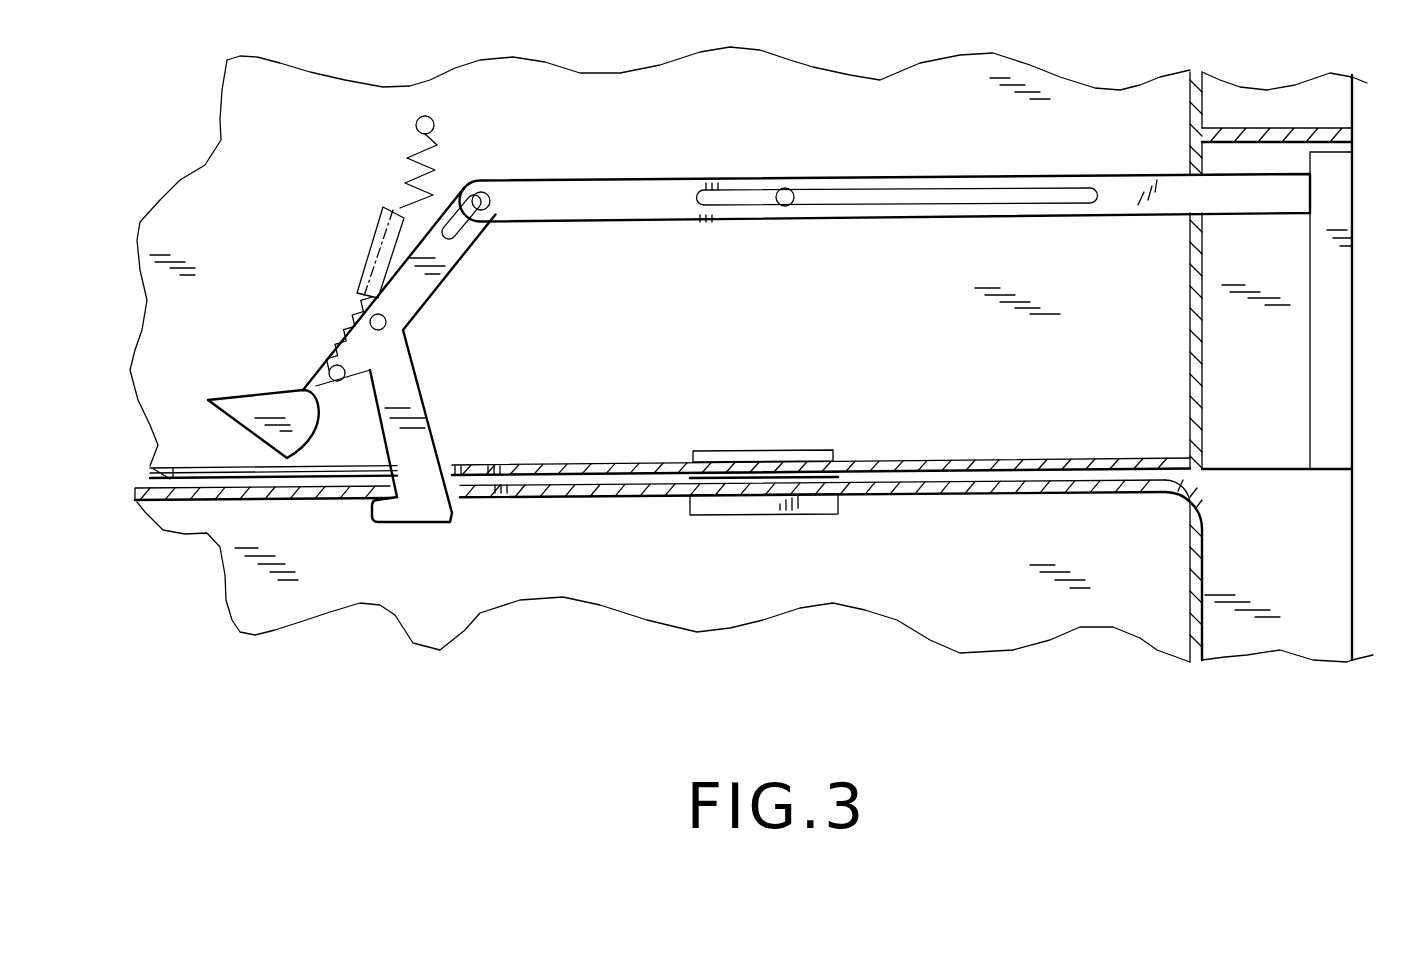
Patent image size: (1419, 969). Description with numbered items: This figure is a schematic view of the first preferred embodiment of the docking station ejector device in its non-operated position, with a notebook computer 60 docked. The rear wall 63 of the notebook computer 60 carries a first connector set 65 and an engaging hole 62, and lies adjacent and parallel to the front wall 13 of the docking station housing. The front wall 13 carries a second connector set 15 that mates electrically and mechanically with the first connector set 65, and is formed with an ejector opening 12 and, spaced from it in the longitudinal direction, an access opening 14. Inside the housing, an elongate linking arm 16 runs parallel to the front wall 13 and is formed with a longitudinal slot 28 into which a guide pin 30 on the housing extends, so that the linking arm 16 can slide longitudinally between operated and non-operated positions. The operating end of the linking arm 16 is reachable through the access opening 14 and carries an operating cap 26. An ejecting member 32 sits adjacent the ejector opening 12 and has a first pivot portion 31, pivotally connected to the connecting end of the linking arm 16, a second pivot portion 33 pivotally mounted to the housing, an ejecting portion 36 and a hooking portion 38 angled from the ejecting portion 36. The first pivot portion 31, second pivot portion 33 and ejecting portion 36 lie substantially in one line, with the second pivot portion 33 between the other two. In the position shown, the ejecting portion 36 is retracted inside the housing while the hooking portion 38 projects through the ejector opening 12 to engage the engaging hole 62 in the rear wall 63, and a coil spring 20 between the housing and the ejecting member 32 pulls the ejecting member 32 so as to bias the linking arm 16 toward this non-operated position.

The ejector opening 12 is at (565, 470).
The front wall 13 is at (1130, 457).
The access opening 14 is at (1258, 447).
The second connector set 15 is at (755, 452).
The linking arm 16 is at (592, 208).
The coil spring 20 is at (397, 185).
The operating cap 26 is at (1330, 258).
The longitudinal slot 28 is at (870, 196).
The guide pin 30 is at (782, 195).
The first pivot portion 31 is at (512, 177).
The ejecting member 32 is at (513, 341).
The second pivot portion 33 is at (331, 309).
The ejecting portion 36 is at (262, 408).
The hooking portion 38 is at (407, 512).
The notebook computer 60 is at (1167, 568).
The engaging hole 62 is at (482, 500).
The rear wall 63 is at (913, 495).
The first connector set 65 is at (720, 513).